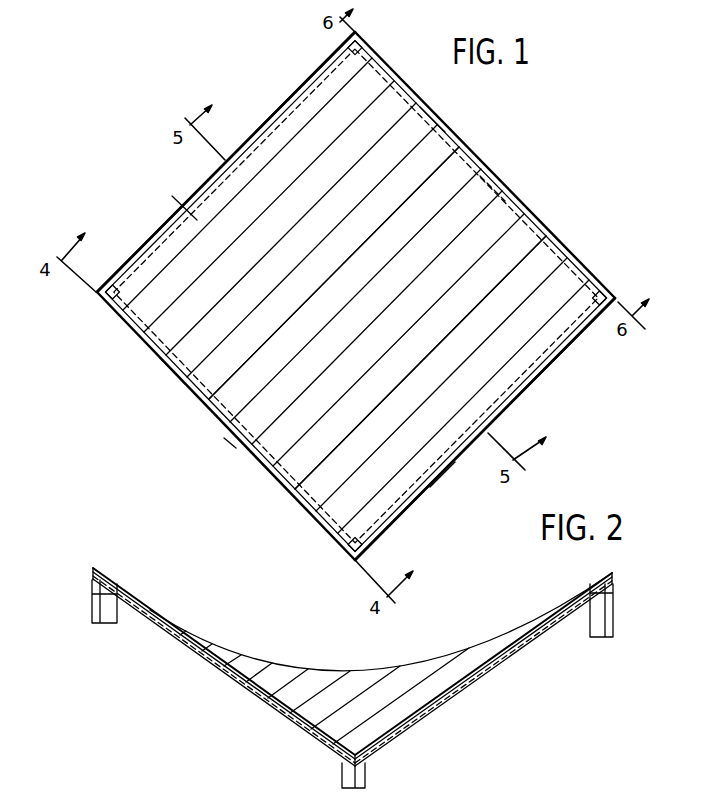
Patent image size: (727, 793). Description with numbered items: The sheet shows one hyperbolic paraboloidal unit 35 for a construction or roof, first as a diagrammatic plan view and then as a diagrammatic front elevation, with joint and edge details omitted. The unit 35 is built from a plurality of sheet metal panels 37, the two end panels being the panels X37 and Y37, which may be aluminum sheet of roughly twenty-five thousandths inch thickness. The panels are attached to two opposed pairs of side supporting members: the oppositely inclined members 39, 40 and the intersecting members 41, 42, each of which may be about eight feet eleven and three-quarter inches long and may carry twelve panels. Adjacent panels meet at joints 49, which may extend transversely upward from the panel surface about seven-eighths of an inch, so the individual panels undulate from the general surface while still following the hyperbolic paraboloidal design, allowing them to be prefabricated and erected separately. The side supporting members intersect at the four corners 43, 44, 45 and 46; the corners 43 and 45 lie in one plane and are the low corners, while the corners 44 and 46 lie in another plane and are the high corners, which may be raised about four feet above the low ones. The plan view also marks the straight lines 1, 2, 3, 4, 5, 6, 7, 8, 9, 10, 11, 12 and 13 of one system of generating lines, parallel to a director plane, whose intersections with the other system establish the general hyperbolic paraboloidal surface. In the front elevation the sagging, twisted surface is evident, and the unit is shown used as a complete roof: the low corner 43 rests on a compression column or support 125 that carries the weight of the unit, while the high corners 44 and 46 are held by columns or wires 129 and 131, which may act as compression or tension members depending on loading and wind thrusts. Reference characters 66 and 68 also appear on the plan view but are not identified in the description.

In FIG. 1, the hyperbolic paraboloidal unit 35 is at (508, 150).
In FIG. 2, the hyperbolic paraboloidal unit 35 is at (103, 707).
In FIG. 1, the sheet metal panel 37 is at (379, 75).
In FIG. 2, the sheet metal panel 37 is at (413, 665).
In FIG. 1, the sheet metal panel X37 is at (292, 98).
In FIG. 2, the sheet metal panel X37 is at (120, 583).
In FIG. 1, the sheet metal panel Y37 is at (513, 377).
In FIG. 2, the sheet metal panel Y37 is at (492, 645).
In FIG. 1, the side supporting member 39 is at (442, 474).
In FIG. 2, the side supporting member 39 is at (460, 693).
In FIG. 1, the side supporting member 40 is at (184, 204).
In FIG. 1, the side supporting member 41 is at (230, 443).
In FIG. 2, the side supporting member 41 is at (262, 705).
In FIG. 1, the side supporting member 42 is at (493, 181).
In FIG. 1, the corner 43 is at (355, 560).
In FIG. 2, the corner 43 is at (345, 759).
In FIG. 1, the corner 44 is at (617, 300).
In FIG. 2, the corner 44 is at (612, 573).
In FIG. 1, the corner 45 is at (357, 36).
In FIG. 1, the corner 46 is at (95, 292).
In FIG. 2, the corner 46 is at (93, 568).
In FIG. 1, the joint 49 is at (284, 322).
In FIG. 2, the joint 49 is at (265, 688).
In FIG. 1, the rail portion 66 is at (173, 376).
In FIG. 1, the rail portion 68 is at (433, 112).
In FIG. 2, the compression column 125 is at (365, 776).
In FIG. 2, the column or wire 129 is at (612, 620).
In FIG. 2, the column or wire 131 is at (92, 607).
In FIG. 1, the straight line 1 is at (349, 566).
In FIG. 1, the straight line 2 is at (328, 544).
In FIG. 1, the straight line 3 is at (306, 521).
In FIG. 1, the straight line 4 is at (284, 499).
In FIG. 1, the straight line 5 is at (263, 477).
In FIG. 1, the straight line 6 is at (242, 454).
In FIG. 1, the straight line 7 is at (220, 432).
In FIG. 1, the straight line 8 is at (198, 410).
In FIG. 1, the straight line 9 is at (177, 387).
In FIG. 1, the straight line 10 is at (156, 365).
In FIG. 1, the straight line 11 is at (134, 343).
In FIG. 1, the straight line 12 is at (112, 320).
In FIG. 1, the straight line 13 is at (91, 298).